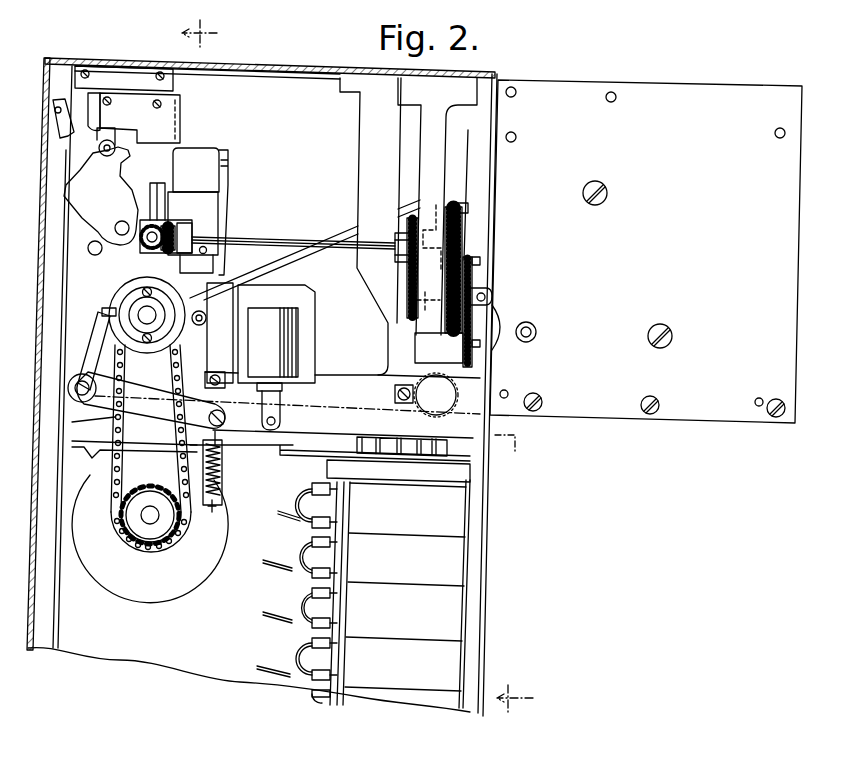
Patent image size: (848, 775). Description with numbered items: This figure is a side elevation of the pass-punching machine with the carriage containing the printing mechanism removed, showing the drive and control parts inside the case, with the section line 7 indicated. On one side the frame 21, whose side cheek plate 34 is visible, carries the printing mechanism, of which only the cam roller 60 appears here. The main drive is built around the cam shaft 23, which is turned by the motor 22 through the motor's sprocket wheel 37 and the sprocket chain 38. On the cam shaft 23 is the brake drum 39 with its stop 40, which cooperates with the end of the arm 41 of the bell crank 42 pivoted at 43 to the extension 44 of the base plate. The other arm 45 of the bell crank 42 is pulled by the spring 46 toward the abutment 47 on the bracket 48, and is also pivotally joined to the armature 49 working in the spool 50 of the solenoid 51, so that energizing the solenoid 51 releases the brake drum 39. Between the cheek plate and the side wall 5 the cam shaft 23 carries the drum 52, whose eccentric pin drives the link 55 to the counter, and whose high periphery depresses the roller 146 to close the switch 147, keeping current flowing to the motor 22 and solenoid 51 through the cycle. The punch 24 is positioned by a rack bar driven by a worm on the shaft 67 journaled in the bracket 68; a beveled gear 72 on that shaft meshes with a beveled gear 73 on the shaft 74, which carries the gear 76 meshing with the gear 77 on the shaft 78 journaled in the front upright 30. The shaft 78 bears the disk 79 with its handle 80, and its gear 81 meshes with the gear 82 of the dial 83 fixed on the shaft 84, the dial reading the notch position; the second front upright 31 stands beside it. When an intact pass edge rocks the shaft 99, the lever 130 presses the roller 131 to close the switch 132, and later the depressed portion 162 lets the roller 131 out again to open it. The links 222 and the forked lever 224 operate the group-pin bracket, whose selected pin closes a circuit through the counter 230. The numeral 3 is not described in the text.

The cabinet frame 3 is at (40, 355).
The side wall 5 is at (50, 307).
The section line 7— 7 is at (357, 368).
The frame 21 is at (713, 425).
The motor 22 is at (168, 595).
The cam shaft 23 is at (150, 308).
The punch 24 is at (212, 150).
The front upright 30 is at (442, 143).
The front upright 31 is at (372, 131).
The side cheek plate 34 is at (598, 403).
The sprocket wheel 37 is at (130, 493).
The sprocket chain 38 is at (112, 460).
The brake drum 39 is at (120, 290).
The stop 40 is at (105, 306).
The arm 41 is at (97, 328).
The bell crank 42 is at (157, 392).
The pivot 43 is at (70, 386).
The extension 44 is at (95, 416).
The arm 45 is at (147, 410).
The spring 46 is at (222, 462).
The abutment 47 is at (222, 505).
The bracket 48 is at (226, 480).
The armature 49 is at (283, 399).
The spool 50 is at (287, 357).
The solenoid 51 is at (307, 342).
The drum 52 is at (196, 261).
The link 55 is at (333, 232).
The cam roller 60 is at (494, 296).
The shaft 67 is at (143, 238).
The bracket 68 is at (192, 232).
The beveled gear 72 is at (160, 232).
The beveled gear 73 is at (172, 233).
The shaft 74 is at (272, 240).
The gear 76 is at (407, 222).
The gear 77 is at (407, 300).
The shaft 78 is at (430, 311).
The disk 79 is at (474, 282).
The handle 80 is at (478, 262).
The gear 81 is at (457, 337).
The gear 82 is at (455, 230).
The dial 83 is at (462, 210).
The shaft 84 is at (435, 234).
The shaft 99 is at (115, 230).
The lever 130 is at (108, 178).
The roller 131 is at (107, 112).
The switch 132 is at (182, 105).
The roller 146 is at (199, 327).
The switch 147 is at (221, 300).
The depressed portion 162 is at (124, 150).
The links 222 is at (70, 100).
The lever 224 is at (58, 96).
The counter 230 is at (457, 603).